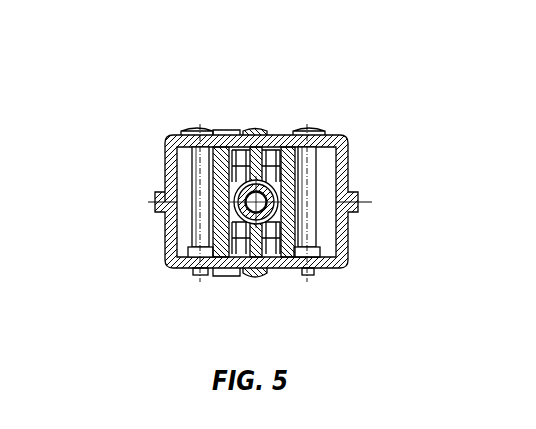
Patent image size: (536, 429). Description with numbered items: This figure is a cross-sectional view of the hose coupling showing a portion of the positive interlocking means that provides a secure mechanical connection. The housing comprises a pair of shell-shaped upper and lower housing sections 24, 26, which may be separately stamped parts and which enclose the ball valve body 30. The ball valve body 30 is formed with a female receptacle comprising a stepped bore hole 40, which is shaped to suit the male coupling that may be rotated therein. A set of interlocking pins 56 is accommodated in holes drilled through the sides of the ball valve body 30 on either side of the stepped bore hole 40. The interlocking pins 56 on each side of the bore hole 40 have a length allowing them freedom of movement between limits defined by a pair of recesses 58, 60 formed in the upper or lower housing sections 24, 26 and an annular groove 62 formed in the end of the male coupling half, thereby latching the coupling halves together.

The upper housing section 24 is at (167, 168).
The lower housing section 26 is at (166, 240).
The ball valve body 30 is at (317, 250).
The stepped bore hole 40 is at (283, 215).
The interlocking pins 56 is at (287, 130).
The recess 58 is at (238, 130).
The recess 60 is at (265, 130).
The annular groove 62 is at (285, 195).